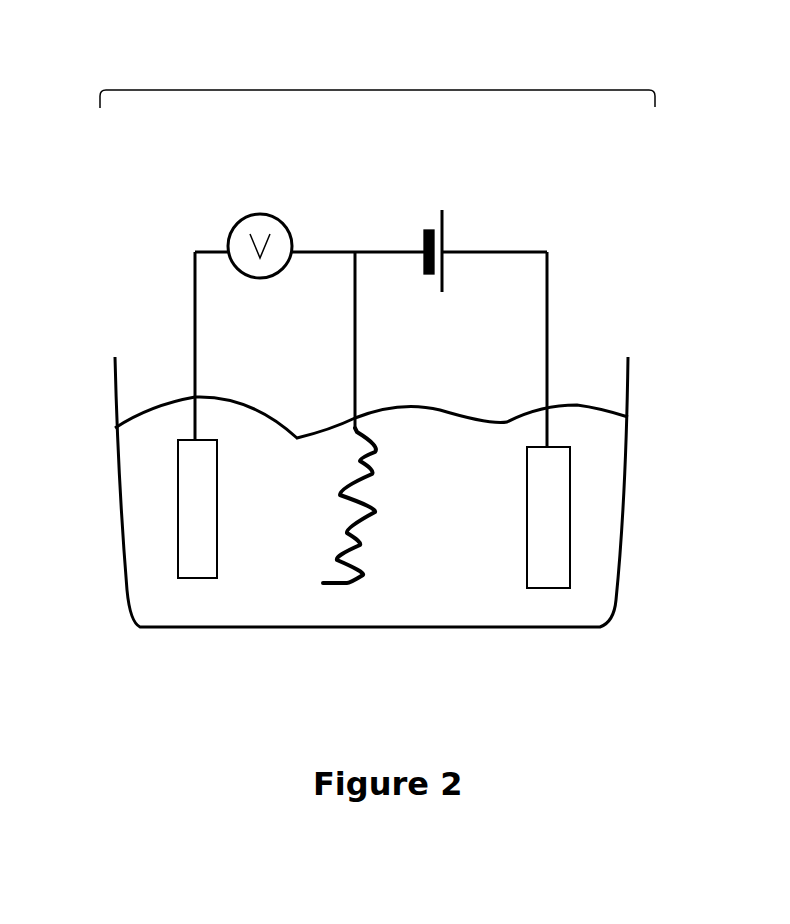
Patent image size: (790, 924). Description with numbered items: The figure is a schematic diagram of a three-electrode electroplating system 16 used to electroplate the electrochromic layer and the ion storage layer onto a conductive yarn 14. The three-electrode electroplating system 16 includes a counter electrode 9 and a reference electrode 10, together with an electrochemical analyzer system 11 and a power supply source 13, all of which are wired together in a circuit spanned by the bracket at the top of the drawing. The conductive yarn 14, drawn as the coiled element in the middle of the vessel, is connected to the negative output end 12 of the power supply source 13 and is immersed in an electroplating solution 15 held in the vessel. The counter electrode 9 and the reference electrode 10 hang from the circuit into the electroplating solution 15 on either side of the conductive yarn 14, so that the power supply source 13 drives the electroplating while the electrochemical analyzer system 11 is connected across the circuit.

The counter electrode 9 is at (197, 543).
The reference electrode 10 is at (547, 540).
The electrochemical analyzer system 11 is at (259, 213).
The negative output end 12 is at (382, 250).
The power supply source 13 is at (445, 225).
The conductive yarn 14 is at (353, 580).
The electroplating solution 15 is at (470, 577).
The three-electrode electroplating system 16 is at (378, 90).